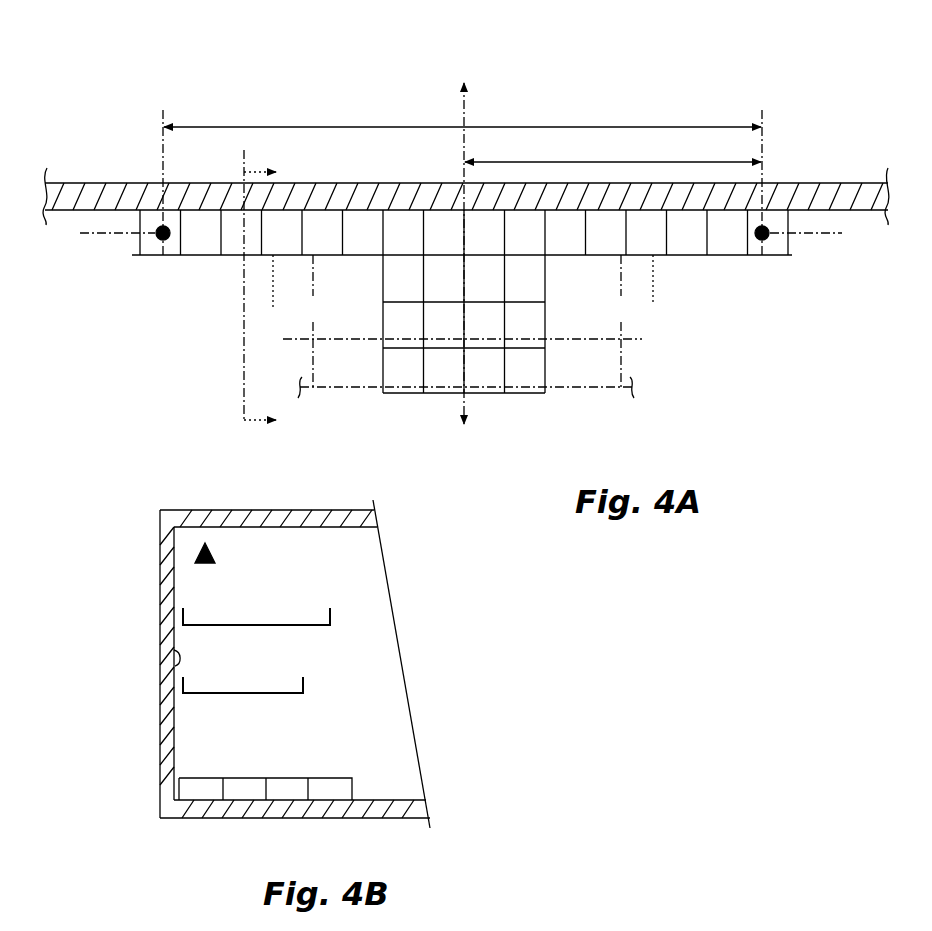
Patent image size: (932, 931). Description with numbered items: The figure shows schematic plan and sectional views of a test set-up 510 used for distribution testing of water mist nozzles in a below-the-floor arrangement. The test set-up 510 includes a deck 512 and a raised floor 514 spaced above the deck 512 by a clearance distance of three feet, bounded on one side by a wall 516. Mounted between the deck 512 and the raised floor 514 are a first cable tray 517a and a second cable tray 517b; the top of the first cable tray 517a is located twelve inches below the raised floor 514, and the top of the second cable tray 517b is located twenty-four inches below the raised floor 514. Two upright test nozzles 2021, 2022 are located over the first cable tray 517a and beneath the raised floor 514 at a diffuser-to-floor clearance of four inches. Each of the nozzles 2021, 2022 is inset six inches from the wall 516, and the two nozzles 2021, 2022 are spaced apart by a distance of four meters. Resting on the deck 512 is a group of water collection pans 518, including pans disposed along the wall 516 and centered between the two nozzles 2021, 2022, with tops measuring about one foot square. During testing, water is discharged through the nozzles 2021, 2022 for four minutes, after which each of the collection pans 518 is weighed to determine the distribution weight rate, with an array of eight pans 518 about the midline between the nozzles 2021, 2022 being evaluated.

In FIG. 4A, the test set-up 510 is at (74, 86).
In FIG. 4B, the test set-up 510 is at (424, 580).
In FIG. 4B, the deck 512 is at (400, 799).
In FIG. 4B, the raised floor 514 is at (355, 528).
In FIG. 4A, the wall 516 is at (105, 212).
In FIG. 4B, the wall 516 is at (176, 664).
In FIG. 4A, the first cable tray 517a is at (583, 390).
In FIG. 4B, the first cable tray 517a is at (331, 616).
In FIG. 4A, the second cable tray 517b is at (653, 303).
In FIG. 4B, the second cable tray 517b is at (304, 686).
In FIG. 4A, the water collection pans 518 is at (395, 397).
In FIG. 4B, the water collection pans 518 is at (353, 785).
In FIG. 4A, the upright test nozzle 2021 is at (163, 241).
In FIG. 4B, the upright test nozzle 2021 is at (216, 552).
In FIG. 4A, the upright test nozzle 2022 is at (764, 241).